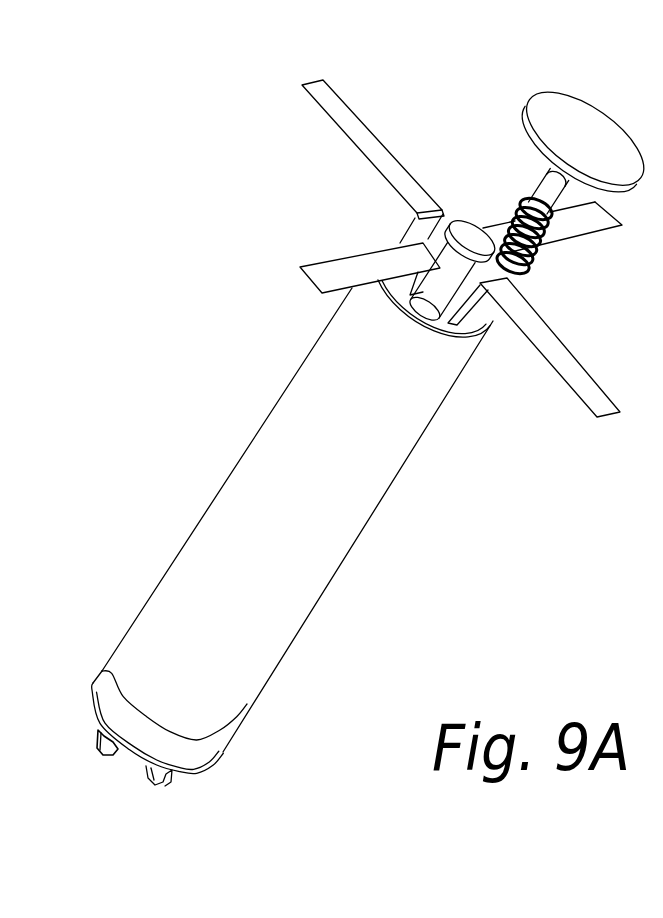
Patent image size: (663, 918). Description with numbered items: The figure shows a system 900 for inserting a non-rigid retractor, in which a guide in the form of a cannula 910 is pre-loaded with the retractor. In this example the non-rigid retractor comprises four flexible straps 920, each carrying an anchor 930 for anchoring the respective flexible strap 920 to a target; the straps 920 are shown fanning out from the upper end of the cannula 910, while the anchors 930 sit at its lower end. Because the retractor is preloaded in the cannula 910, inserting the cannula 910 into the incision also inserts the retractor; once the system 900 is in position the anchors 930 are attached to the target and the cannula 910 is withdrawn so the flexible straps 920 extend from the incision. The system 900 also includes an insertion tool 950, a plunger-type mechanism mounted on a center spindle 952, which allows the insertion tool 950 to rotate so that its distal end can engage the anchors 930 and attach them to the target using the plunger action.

The system 900 is at (205, 167).
The cannula 910 is at (363, 450).
The flexible straps 920 is at (347, 119).
The anchor 930 is at (100, 757).
The insertion tool 950 is at (543, 193).
The center spindle 952 is at (416, 228).